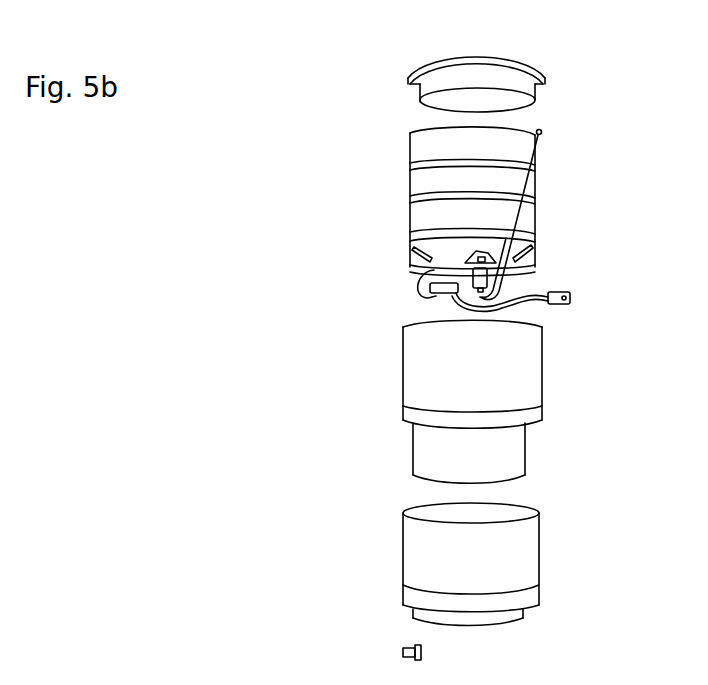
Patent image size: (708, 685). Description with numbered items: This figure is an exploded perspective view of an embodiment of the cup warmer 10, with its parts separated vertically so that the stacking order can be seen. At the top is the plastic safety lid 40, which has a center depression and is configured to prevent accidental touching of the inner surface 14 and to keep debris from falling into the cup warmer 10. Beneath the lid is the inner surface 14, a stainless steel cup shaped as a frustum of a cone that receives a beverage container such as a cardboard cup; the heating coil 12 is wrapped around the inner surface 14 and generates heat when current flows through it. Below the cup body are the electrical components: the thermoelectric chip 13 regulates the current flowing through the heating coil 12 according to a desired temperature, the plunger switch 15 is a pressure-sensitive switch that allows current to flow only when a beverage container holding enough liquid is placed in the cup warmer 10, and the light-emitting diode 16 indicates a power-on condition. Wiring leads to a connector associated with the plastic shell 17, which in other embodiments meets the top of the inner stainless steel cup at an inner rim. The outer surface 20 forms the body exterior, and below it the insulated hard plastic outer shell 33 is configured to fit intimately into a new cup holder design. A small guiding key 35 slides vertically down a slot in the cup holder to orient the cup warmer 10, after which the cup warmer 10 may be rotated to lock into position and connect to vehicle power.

The cup warmer 10 is at (454, 343).
The plastic safety lid 40 is at (537, 97).
The inner surface 14 is at (430, 150).
The heating coil 12 is at (410, 198).
The light-emitting diode 16 is at (542, 131).
The plunger switch 15 is at (489, 277).
The thermoelectric chip 13 is at (430, 288).
The plastic shell 17 is at (571, 298).
The outer surface 20 is at (545, 383).
The insulated hard plastic outer shell 33 is at (542, 556).
The guiding key 35 is at (424, 652).